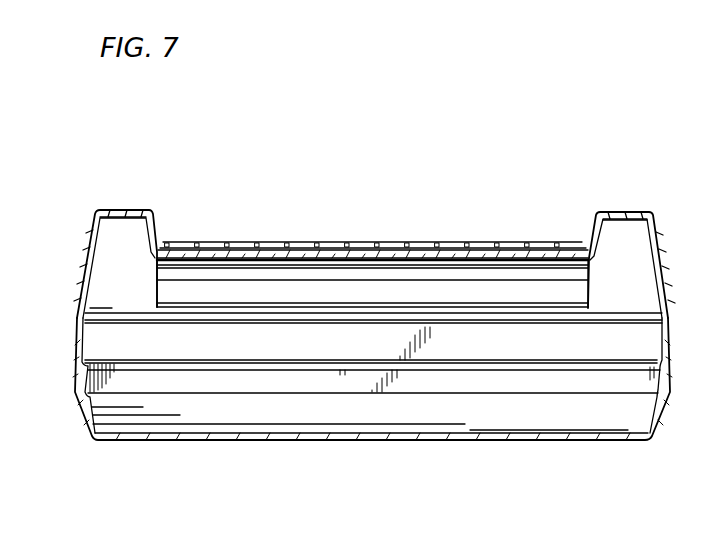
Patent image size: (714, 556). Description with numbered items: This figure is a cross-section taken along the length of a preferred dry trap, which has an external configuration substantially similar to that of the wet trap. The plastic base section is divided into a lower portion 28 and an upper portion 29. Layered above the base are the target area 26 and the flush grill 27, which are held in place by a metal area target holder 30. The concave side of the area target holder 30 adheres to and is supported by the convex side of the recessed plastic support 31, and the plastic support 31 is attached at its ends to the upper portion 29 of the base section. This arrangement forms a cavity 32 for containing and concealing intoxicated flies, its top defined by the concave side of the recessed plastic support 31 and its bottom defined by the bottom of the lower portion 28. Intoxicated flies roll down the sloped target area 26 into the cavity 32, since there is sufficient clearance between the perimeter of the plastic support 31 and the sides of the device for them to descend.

The target area 26 is at (232, 250).
The flush grill 27 is at (290, 242).
The lower portion 28 is at (87, 413).
The upper portion 29 is at (87, 265).
The area target holder 30 is at (378, 258).
The recessed plastic support 31 is at (467, 258).
The cavity 32 is at (488, 350).